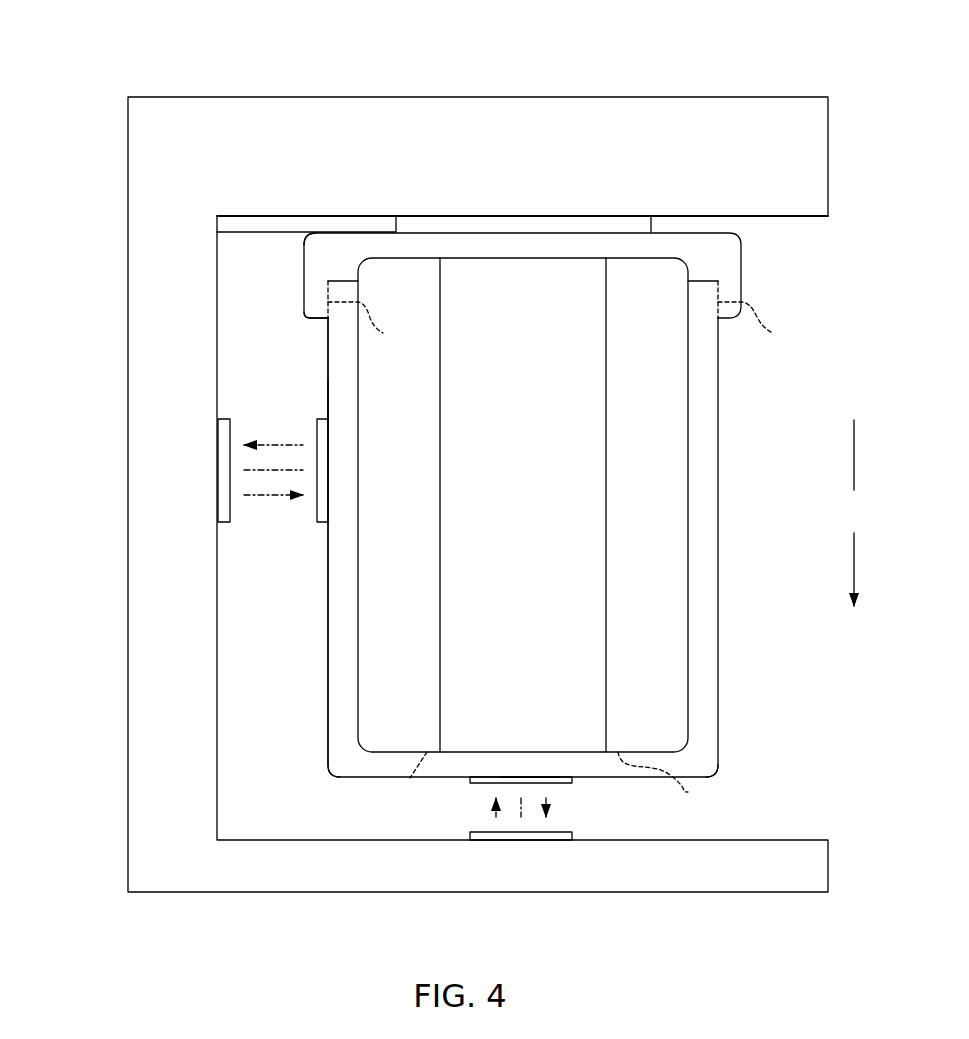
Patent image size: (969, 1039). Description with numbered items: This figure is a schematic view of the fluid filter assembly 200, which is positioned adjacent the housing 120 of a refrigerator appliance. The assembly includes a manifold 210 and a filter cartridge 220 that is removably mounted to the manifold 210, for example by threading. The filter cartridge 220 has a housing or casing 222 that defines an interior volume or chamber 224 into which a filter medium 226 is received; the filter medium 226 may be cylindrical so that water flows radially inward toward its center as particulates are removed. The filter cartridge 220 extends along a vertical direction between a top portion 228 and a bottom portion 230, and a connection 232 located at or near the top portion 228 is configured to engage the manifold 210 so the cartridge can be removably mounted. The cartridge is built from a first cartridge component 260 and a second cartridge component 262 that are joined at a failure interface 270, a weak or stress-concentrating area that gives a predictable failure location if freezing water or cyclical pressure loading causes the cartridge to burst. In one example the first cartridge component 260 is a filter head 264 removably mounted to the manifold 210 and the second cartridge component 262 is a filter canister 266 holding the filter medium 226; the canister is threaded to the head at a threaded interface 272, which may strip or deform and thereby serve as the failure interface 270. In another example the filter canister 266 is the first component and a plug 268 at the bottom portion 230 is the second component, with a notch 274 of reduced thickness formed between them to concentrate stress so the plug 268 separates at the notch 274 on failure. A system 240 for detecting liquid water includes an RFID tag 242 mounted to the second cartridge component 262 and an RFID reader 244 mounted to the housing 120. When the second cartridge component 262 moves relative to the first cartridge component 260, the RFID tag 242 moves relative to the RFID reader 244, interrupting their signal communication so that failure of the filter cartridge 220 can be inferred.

The housing 120 is at (142, 180).
The fluid filter assembly 200 is at (836, 92).
The manifold 210 is at (602, 112).
The filter cartridge 220 is at (745, 278).
The housing or casing 222 is at (718, 508).
The interior volume or chamber 224 is at (670, 610).
The filter medium 226 is at (440, 656).
The top portion 228 is at (766, 232).
The bottom portion 230 is at (735, 770).
The connection 232 is at (490, 206).
The system for detecting liquid water 240 is at (274, 534).
The RFID tag 242 is at (317, 424).
The RFID reader 244 is at (220, 432).
The first cartridge component 260 is at (313, 261).
The second cartridge component 262 is at (338, 363).
The filter head 264 is at (313, 297).
The filter canister 266 is at (340, 400).
The plug 268 is at (532, 764).
The failure interface 270 is at (720, 554).
The threaded interface 272 is at (378, 323).
The notch 274 is at (427, 740).